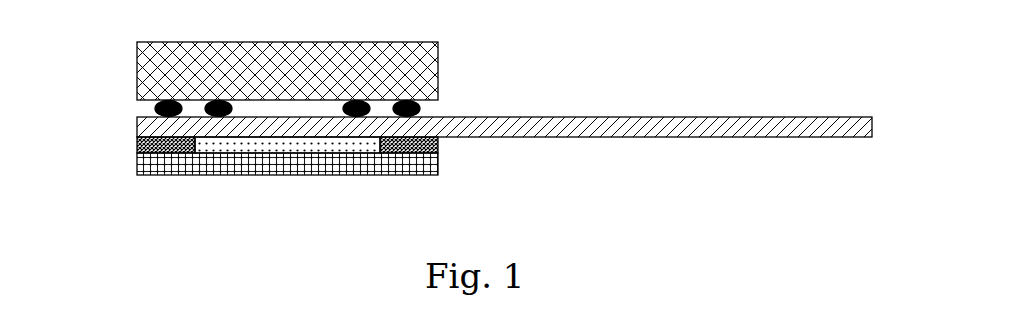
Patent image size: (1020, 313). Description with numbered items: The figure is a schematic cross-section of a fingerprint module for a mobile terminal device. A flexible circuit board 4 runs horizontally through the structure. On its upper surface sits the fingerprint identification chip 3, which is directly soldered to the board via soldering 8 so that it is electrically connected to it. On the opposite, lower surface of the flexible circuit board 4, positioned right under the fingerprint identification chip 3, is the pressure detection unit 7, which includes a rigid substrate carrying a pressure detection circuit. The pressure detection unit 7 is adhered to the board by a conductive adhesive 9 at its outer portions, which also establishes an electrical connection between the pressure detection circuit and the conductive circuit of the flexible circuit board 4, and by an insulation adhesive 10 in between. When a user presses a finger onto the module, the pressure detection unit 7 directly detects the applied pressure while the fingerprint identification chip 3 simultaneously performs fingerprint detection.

The fingerprint identification chip 3 is at (434, 71).
The soldering 8 is at (414, 107).
The flexible circuit board 4 is at (714, 138).
The conductive adhesive 9 is at (149, 141).
The insulation adhesive 10 is at (329, 147).
The pressure detection unit 7 is at (281, 166).